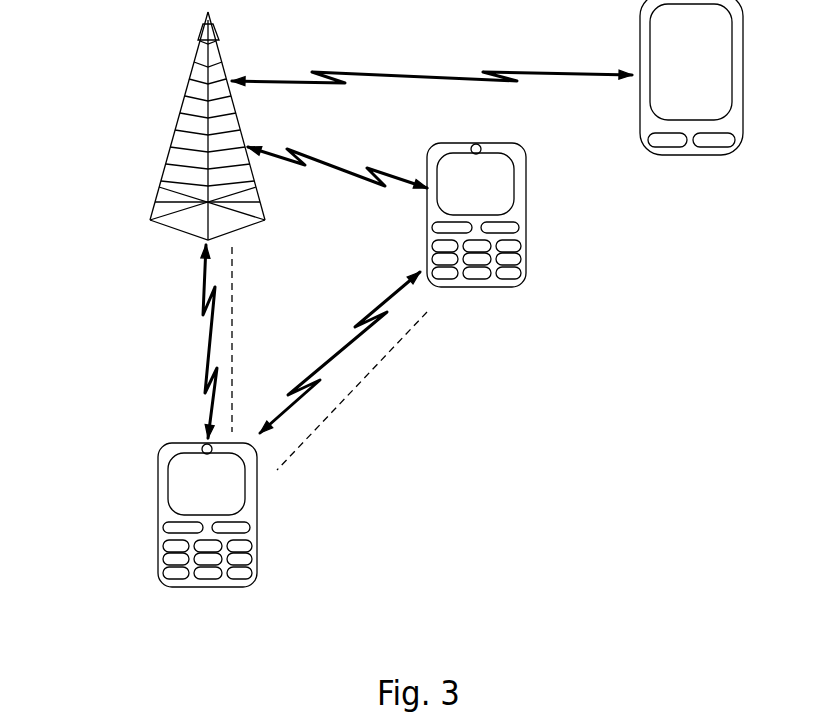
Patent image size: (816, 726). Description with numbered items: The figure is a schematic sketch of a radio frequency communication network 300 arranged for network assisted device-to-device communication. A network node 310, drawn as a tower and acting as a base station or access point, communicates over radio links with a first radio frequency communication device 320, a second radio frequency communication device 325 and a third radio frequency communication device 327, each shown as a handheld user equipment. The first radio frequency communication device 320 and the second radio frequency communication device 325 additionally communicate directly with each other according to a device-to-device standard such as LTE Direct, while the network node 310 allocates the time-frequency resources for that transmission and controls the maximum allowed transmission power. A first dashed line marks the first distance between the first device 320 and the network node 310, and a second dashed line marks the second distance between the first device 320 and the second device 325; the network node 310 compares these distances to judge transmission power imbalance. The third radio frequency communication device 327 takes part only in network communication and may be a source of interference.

The radio frequency communication network 300 is at (122, 79).
The network node 310 is at (175, 229).
The first radio frequency communication device 320 is at (207, 587).
The second radio frequency communication device 325 is at (476, 263).
The third radio frequency communication device 327 is at (692, 155).